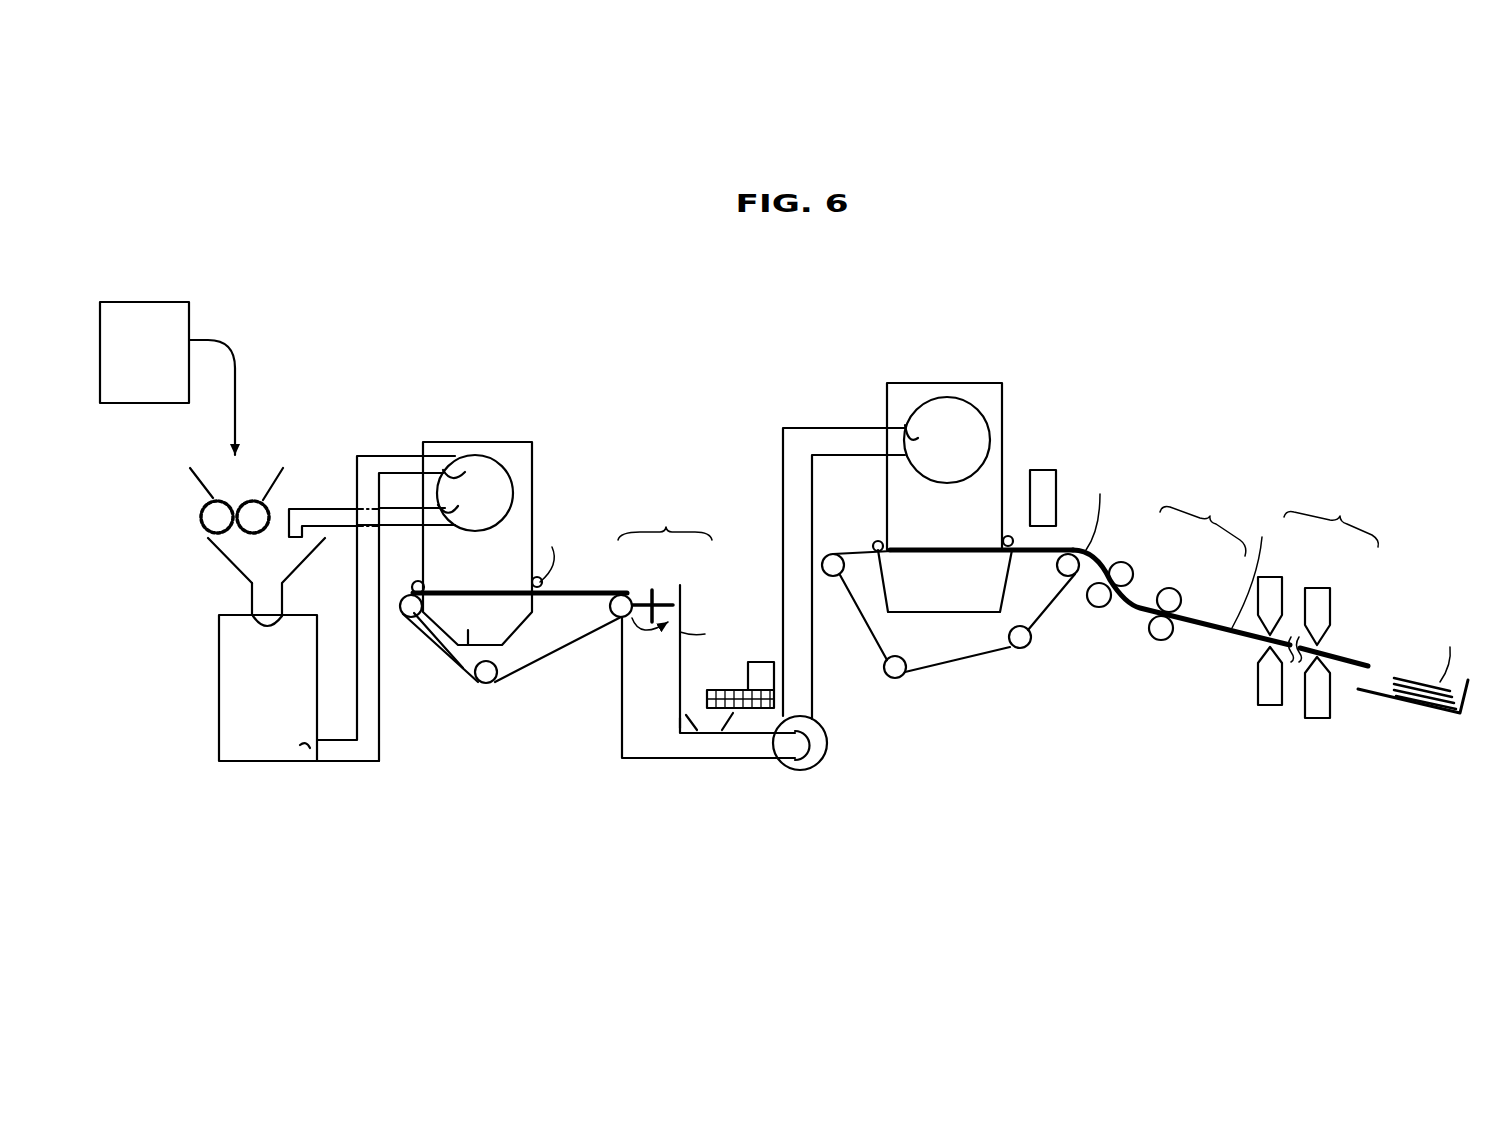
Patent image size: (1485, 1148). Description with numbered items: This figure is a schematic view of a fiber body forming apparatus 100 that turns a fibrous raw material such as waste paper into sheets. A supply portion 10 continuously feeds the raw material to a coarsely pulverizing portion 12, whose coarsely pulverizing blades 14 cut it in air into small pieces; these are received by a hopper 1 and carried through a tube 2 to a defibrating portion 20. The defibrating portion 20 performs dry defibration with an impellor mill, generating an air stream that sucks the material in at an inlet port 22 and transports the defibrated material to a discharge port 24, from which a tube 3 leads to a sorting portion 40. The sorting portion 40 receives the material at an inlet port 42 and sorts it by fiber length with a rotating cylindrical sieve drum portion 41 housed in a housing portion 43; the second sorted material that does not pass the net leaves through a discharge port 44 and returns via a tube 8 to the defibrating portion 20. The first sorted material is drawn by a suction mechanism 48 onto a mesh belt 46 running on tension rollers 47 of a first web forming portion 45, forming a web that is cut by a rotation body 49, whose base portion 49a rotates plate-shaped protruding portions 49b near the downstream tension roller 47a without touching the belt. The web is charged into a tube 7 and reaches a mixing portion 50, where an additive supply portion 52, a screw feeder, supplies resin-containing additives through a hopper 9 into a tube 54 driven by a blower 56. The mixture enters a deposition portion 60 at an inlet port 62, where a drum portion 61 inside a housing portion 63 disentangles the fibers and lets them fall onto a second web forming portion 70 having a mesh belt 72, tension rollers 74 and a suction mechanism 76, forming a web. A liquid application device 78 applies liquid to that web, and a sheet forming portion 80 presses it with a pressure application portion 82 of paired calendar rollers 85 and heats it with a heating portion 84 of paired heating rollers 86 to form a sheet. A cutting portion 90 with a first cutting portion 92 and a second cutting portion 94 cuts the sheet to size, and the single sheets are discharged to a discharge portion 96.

The fiber body forming apparatus 100 is at (1125, 310).
The supply portion 10 is at (197, 292).
The coarsely pulverizing portion 12 is at (199, 486).
The coarsely pulverizing blades 14 is at (217, 517).
The hopper 1 is at (222, 558).
The tube 2 is at (250, 598).
The tube 3 is at (357, 600).
The tube 8 is at (338, 512).
The defibrating portion 20 is at (207, 770).
The inlet port 22 is at (262, 632).
The discharge port 24 is at (300, 750).
The sorting portion 40 is at (540, 422).
The drum portion 41 is at (513, 493).
The inlet port 42 is at (460, 470).
The housing portion 43 is at (532, 468).
The discharge port 44 is at (440, 505).
The first web forming portion 45 is at (435, 655).
The mesh belt 46 is at (535, 662).
The tension rollers 47 is at (407, 616).
The tension roller 47a is at (606, 628).
The suction mechanism 48 is at (461, 667).
The rotation body 49 is at (671, 573).
The base portion 49a is at (657, 603).
The protruding portions 49b is at (650, 593).
The tube 7 is at (665, 677).
The hopper 9 is at (680, 722).
The mixing portion 50 is at (832, 773).
The additive supply portion 52 is at (760, 660).
The tube 54 is at (790, 572).
The blower 56 is at (813, 755).
The deposition portion 60 is at (1010, 366).
The drum portion 61 is at (1002, 430).
The inlet port 62 is at (913, 432).
The housing portion 63 is at (1002, 405).
The second web forming portion 70 is at (1018, 712).
The mesh belt 72 is at (873, 547).
The tension rollers 74 is at (836, 578).
The suction mechanism 76 is at (937, 590).
The liquid application device 78 is at (1043, 472).
The sheet forming portion 80 is at (1166, 591).
The pressure application portion 82 is at (1134, 586).
The heating portion 84 is at (1190, 618).
The calendar rollers 85 is at (1118, 562).
The heating rollers 86 is at (1166, 588).
The cutting portion 90 is at (1305, 602).
The first cutting portion 92 is at (1269, 564).
The second cutting portion 94 is at (1316, 577).
The discharge portion 96 is at (1447, 716).